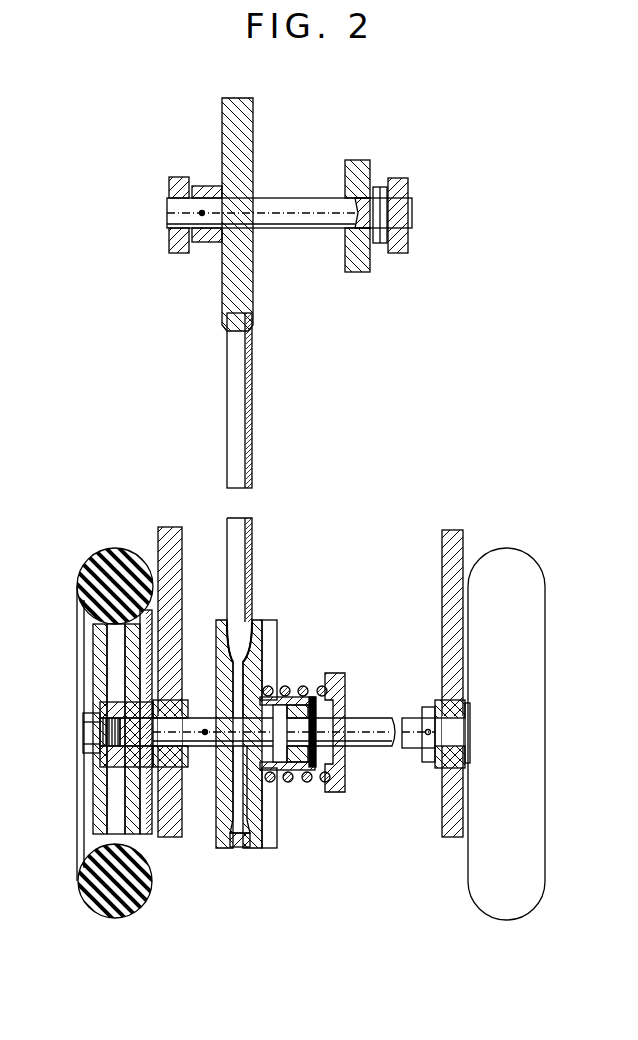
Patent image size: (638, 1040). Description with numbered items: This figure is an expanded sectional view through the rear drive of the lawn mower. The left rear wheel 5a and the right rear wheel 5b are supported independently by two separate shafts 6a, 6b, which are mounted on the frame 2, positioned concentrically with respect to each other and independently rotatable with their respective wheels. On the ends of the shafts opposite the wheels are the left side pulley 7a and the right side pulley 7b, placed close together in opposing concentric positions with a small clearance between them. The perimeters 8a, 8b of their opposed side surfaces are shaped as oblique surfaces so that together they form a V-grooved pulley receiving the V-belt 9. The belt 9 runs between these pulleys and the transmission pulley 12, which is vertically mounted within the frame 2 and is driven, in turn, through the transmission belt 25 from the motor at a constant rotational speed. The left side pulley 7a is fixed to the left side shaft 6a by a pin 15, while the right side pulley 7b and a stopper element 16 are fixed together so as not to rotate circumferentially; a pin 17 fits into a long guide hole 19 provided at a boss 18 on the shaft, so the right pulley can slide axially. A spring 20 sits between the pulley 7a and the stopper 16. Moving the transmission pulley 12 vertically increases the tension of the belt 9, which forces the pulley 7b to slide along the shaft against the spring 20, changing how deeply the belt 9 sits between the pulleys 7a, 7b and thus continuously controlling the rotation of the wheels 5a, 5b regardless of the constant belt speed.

The frame 2 is at (167, 542).
The left rear wheel 5a is at (142, 903).
The right rear wheel 5b is at (520, 910).
The left rear shaft 6a is at (205, 730).
The right rear shaft 6b is at (367, 727).
The left side pulley 7a is at (221, 650).
The right side pulley 7b is at (263, 646).
The perimeter of opposed side surface 8a is at (238, 640).
The perimeter of opposed side surface 8b is at (250, 632).
The V-belt 9 is at (245, 385).
The transmission pulley 12 is at (253, 124).
The pin 15 is at (205, 736).
The stopper element 16 is at (344, 678).
The pin 17 is at (311, 698).
The boss 18 is at (282, 782).
The long guide hole 19 is at (300, 780).
The spring 20 is at (288, 685).
The transmission belt 25 is at (357, 159).